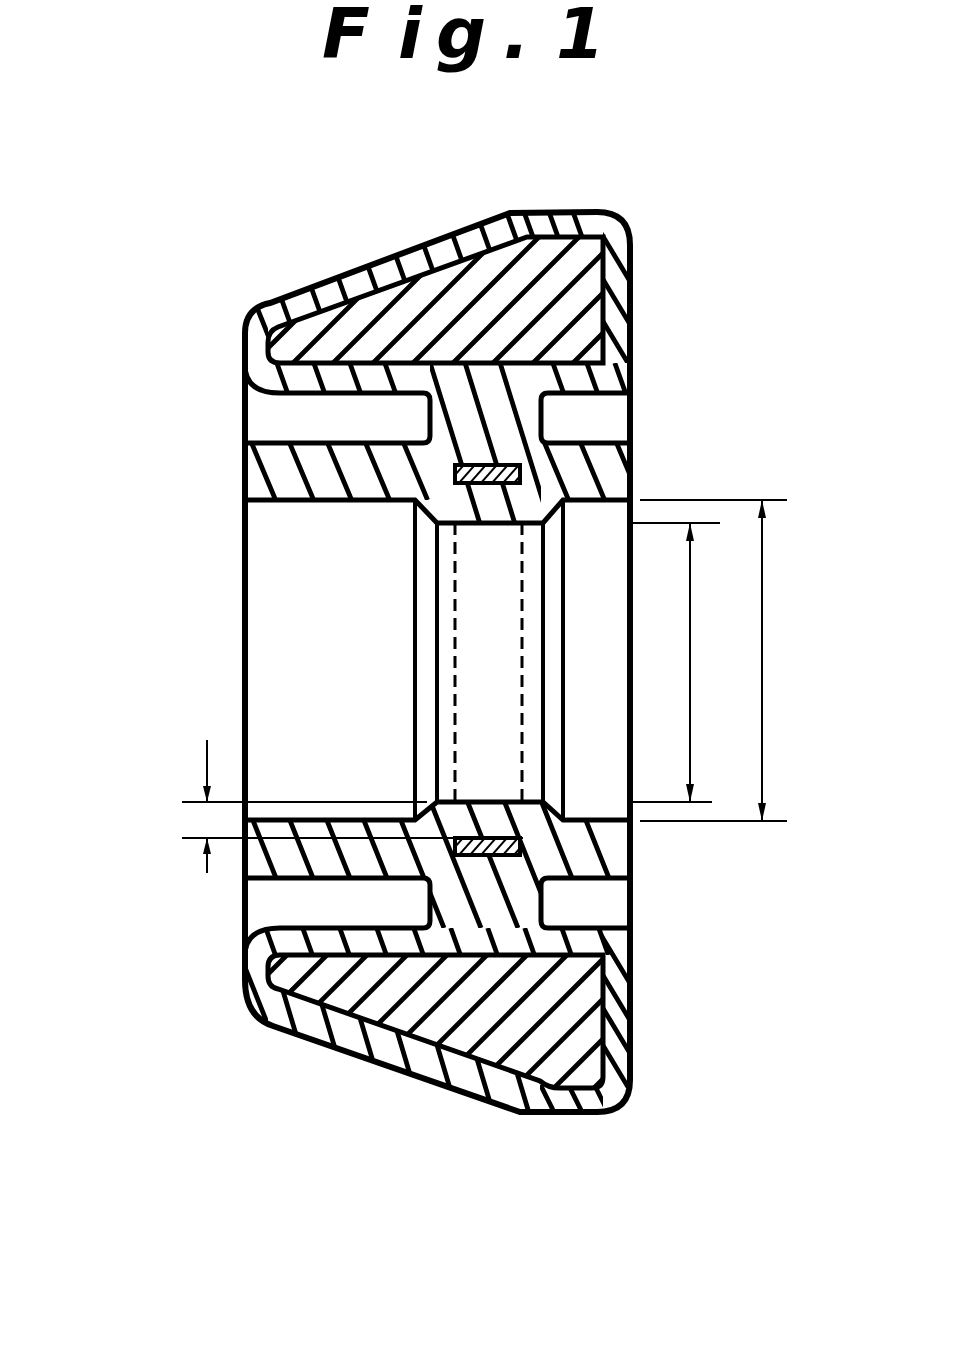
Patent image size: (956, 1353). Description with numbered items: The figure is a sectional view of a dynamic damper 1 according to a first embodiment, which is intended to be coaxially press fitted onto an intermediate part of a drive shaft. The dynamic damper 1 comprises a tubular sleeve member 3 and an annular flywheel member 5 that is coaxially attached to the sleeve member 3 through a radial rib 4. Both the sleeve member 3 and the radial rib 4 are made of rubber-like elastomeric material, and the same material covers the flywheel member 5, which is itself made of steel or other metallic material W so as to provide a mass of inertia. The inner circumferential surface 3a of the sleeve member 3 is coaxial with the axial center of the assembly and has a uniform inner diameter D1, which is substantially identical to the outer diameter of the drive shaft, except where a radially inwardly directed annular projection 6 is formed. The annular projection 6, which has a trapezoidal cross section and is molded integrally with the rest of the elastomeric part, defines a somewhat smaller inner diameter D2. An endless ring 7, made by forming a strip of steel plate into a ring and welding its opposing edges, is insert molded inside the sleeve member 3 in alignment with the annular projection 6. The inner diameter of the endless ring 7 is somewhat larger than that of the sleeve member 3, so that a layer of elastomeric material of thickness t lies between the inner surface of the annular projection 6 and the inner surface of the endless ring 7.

The dynamic damper 1 is at (670, 272).
The tubular sleeve member 3 is at (253, 480).
The inner circumferential surface 3a is at (317, 505).
The radial rib 4 is at (453, 907).
The annular flywheel member 5 is at (245, 1005).
The annular projection 6 is at (487, 528).
The endless ring 7 is at (520, 843).
The metallic material W is at (403, 1020).
The inner diameter of the inner circumferential surface D1 is at (713, 660).
The inner diameter of the annular projection D2 is at (676, 662).
The thickness of elastomeric layer t is at (341, 806).